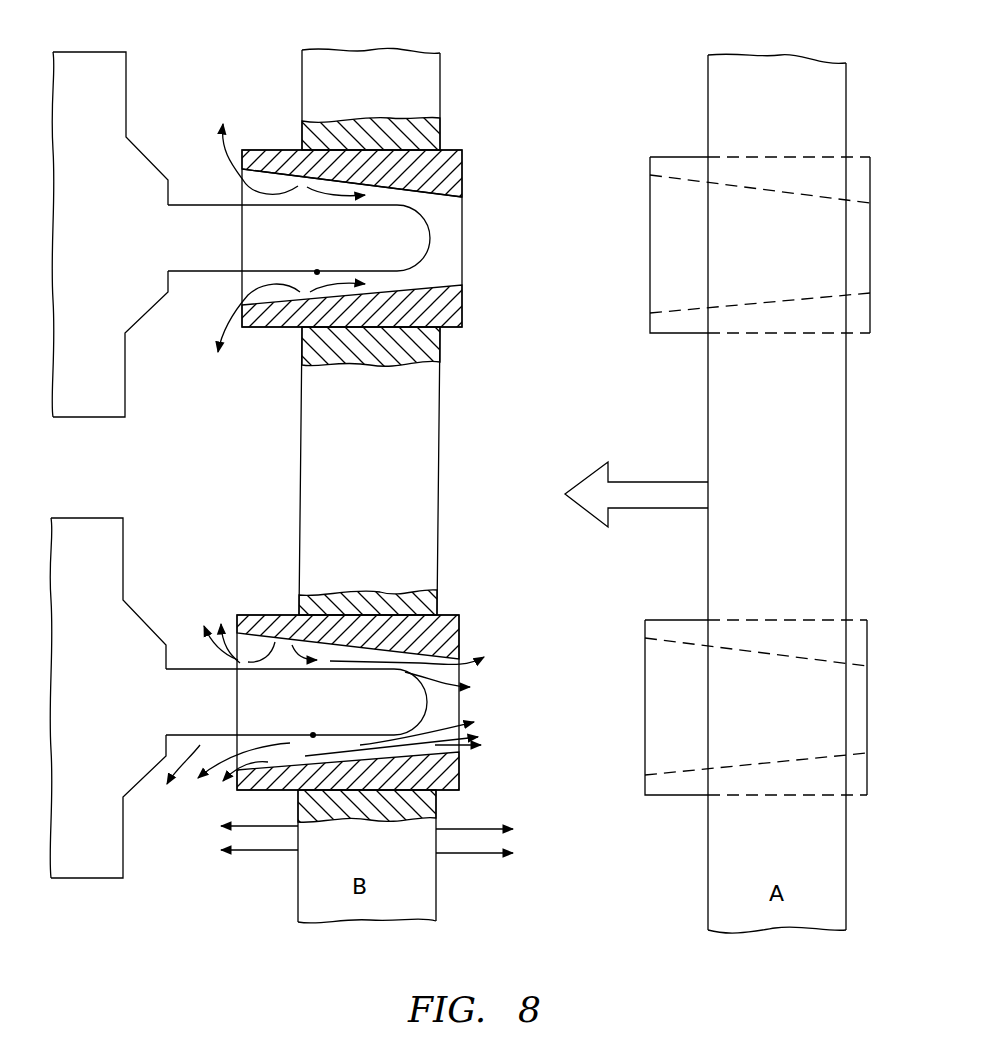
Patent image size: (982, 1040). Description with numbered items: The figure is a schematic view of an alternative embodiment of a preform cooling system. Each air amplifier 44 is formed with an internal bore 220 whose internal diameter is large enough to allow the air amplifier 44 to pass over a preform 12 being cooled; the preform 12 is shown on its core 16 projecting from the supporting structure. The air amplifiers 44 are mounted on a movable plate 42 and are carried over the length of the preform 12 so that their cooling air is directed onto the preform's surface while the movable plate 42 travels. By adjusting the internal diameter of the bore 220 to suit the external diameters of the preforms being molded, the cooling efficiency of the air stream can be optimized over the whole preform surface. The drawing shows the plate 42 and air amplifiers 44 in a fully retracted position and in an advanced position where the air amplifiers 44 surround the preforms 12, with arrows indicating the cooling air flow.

The preform 12 is at (200, 205).
The shaft 16 is at (322, 249).
The movable plate 42 is at (384, 94).
The air amplifier 44 is at (461, 150).
The internal bore 220 is at (447, 197).